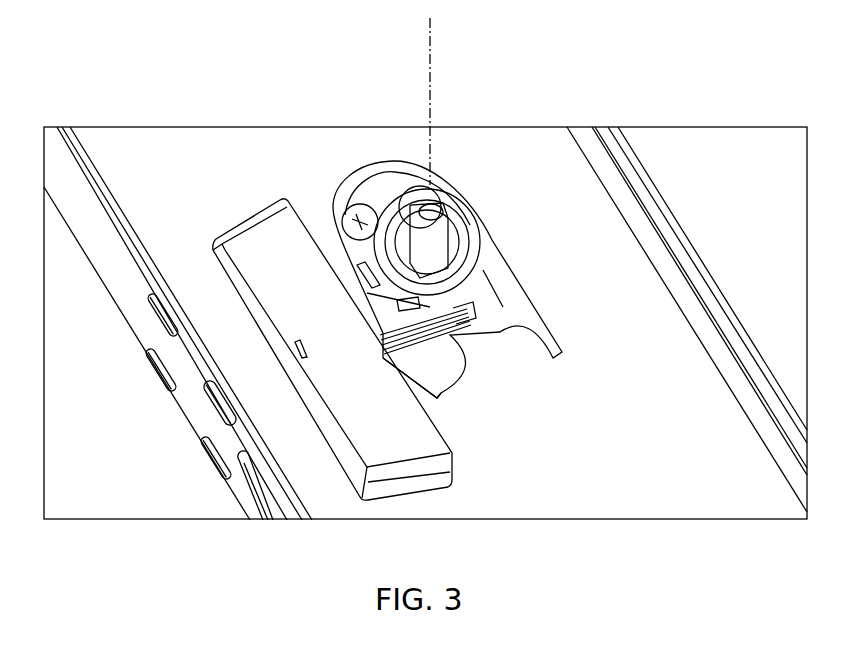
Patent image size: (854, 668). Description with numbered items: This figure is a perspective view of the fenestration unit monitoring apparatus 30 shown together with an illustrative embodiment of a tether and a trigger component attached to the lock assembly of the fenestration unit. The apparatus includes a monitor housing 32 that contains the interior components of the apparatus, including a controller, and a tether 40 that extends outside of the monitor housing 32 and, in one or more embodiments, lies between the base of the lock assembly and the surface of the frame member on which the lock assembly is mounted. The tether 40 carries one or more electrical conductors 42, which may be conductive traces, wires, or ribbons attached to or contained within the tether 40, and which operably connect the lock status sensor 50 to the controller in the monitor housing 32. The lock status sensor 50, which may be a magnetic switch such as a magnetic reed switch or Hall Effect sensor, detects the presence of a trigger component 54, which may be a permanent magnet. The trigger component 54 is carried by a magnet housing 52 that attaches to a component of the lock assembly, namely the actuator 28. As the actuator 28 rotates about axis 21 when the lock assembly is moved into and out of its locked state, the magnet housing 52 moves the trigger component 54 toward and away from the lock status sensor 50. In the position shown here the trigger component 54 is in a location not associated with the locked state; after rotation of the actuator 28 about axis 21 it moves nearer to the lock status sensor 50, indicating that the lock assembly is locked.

The axis 21 is at (429, 44).
The actuator 28 is at (420, 203).
The fenestration unit monitoring apparatus 30 is at (253, 192).
The monitor housing 32 is at (245, 248).
The tether 40 is at (520, 313).
The electrical conductors 42 is at (443, 352).
The lock status sensor 50 is at (518, 272).
The magnet housing 52 is at (467, 250).
The trigger component 54 is at (353, 223).